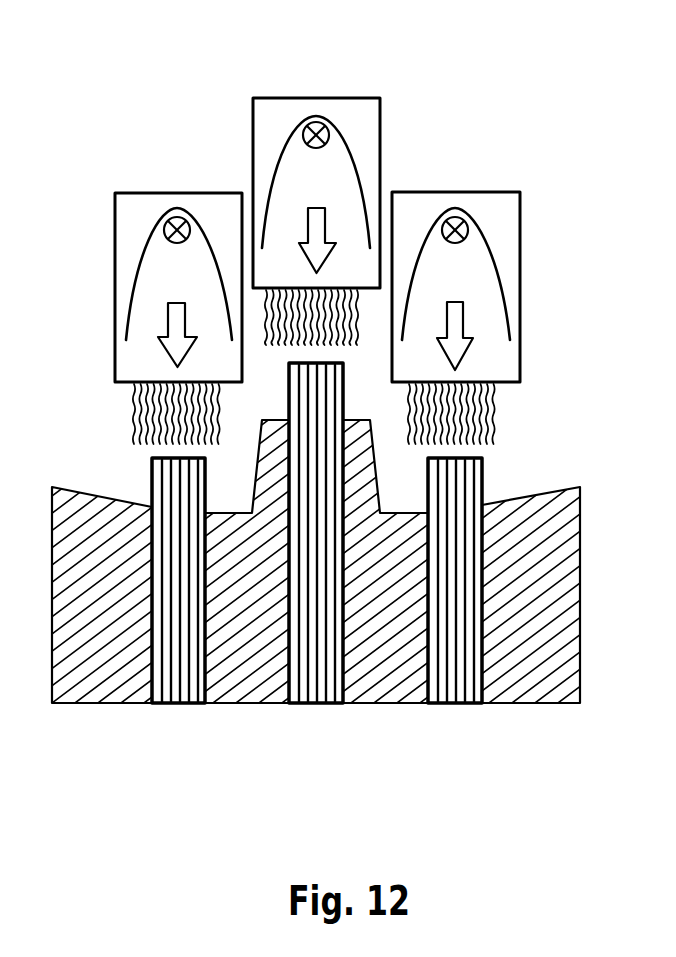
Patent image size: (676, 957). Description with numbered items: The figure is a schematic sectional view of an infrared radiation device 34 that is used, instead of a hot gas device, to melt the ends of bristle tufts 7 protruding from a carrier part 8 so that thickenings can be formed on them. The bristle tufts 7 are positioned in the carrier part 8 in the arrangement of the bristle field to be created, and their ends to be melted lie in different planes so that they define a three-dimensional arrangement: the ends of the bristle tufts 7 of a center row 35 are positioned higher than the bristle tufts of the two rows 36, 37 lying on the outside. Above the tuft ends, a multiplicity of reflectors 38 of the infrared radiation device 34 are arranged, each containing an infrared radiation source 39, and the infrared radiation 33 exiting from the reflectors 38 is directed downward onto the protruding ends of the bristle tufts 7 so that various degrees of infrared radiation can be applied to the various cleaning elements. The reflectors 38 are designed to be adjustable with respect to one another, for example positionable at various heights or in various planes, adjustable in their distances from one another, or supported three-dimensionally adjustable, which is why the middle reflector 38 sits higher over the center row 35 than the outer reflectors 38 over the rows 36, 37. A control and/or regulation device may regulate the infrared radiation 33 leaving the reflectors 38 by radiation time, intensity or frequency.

The infrared radiation device 34 is at (538, 71).
The carrier part 8 is at (540, 604).
The bristle tufts 7 is at (343, 587).
The outer row 36 is at (176, 724).
The center row 35 is at (316, 724).
The outer row 37 is at (456, 724).
The infrared radiation 33 is at (132, 410).
The reflectors 38 is at (142, 252).
The infrared radiation source 39 is at (177, 217).